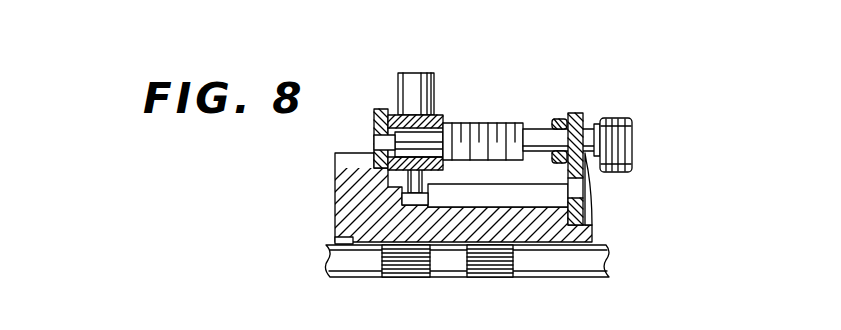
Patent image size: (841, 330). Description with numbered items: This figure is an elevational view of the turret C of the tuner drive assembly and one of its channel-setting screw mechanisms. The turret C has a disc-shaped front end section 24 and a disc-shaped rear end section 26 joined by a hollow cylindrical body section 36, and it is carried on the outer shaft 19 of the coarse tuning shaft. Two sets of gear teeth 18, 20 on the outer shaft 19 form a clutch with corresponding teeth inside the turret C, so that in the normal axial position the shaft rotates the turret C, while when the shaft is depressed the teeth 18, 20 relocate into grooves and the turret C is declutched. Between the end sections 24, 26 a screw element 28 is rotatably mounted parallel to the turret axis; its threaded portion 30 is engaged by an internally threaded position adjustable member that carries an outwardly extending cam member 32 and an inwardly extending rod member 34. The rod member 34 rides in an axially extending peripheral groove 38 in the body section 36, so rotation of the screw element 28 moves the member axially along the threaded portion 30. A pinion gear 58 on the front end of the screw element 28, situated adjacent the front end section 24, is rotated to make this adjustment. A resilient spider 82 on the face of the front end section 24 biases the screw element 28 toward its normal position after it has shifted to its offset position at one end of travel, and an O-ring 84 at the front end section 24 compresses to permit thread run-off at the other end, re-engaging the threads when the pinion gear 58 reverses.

The turret C is at (336, 214).
The rear end section 26 is at (384, 110).
The cam member 32 is at (413, 80).
The threaded portion 30 is at (484, 126).
The screw element 28 is at (536, 127).
The O-ring 84 is at (560, 119).
The front end section 24 is at (577, 113).
The pinion gear 58 is at (620, 137).
The spider 82 is at (590, 182).
The rod member 34 is at (416, 182).
The peripheral groove 38 is at (493, 201).
The body section 36 is at (366, 240).
The gear teeth 18 is at (417, 270).
The gear teeth 20 is at (500, 270).
The outer shaft 19 is at (594, 263).